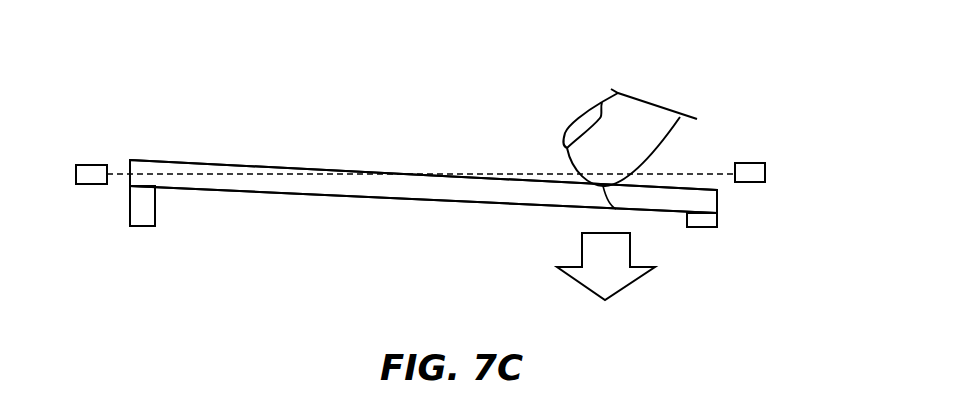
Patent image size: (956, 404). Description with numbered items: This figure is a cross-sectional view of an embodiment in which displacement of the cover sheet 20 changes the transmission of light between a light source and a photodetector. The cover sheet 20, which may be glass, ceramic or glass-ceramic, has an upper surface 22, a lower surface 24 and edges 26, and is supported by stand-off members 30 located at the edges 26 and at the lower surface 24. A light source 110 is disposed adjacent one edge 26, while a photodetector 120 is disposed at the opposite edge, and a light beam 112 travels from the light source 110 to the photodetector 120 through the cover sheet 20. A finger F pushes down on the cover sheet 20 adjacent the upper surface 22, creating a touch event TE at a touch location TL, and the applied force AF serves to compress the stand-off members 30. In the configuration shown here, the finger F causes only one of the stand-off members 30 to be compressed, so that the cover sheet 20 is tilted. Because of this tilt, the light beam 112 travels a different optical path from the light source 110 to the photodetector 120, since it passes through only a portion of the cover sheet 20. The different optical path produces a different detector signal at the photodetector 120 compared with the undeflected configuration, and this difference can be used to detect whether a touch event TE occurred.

The cover sheet 20 is at (487, 151).
The upper surface 22 is at (358, 165).
The lower surface 24 is at (522, 191).
The edges 26 is at (131, 170).
The stand-off members 30 is at (130, 201).
The light source 110 is at (93, 165).
The light beam 112 is at (238, 178).
The photodetector 120 is at (751, 163).
The finger F is at (634, 97).
The touch event TE is at (680, 155).
The touch location TL is at (645, 214).
The applied force AF is at (633, 285).